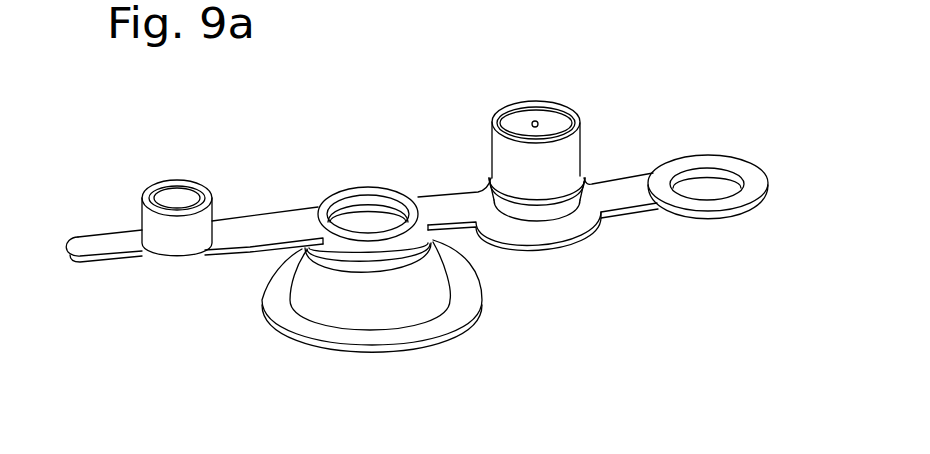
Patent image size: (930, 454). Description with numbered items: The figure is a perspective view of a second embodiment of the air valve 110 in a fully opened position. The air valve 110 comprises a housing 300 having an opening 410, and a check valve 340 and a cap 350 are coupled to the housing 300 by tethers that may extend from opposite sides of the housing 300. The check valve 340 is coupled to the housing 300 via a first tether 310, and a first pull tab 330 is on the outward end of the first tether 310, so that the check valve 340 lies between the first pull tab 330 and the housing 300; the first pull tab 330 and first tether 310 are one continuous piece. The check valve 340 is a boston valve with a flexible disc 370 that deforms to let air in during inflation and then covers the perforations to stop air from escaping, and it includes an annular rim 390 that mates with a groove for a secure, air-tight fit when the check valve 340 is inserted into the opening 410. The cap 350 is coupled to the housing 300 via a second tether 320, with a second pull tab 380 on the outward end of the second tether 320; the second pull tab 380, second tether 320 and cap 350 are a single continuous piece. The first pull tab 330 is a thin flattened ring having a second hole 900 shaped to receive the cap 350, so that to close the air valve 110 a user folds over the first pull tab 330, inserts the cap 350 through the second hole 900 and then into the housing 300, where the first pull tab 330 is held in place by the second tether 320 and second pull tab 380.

The air valve 110 is at (63, 172).
The housing 300 is at (367, 265).
The first tether 310 is at (443, 196).
The second tether 320 is at (249, 258).
The first pull tab 330 is at (745, 203).
The check valve 340 is at (506, 152).
The cap 350 is at (190, 181).
The flexible disc 370 is at (550, 115).
The second pull tab 380 is at (93, 262).
The annular rim 390 is at (582, 183).
The opening 410 is at (365, 232).
The second hole 900 is at (697, 190).